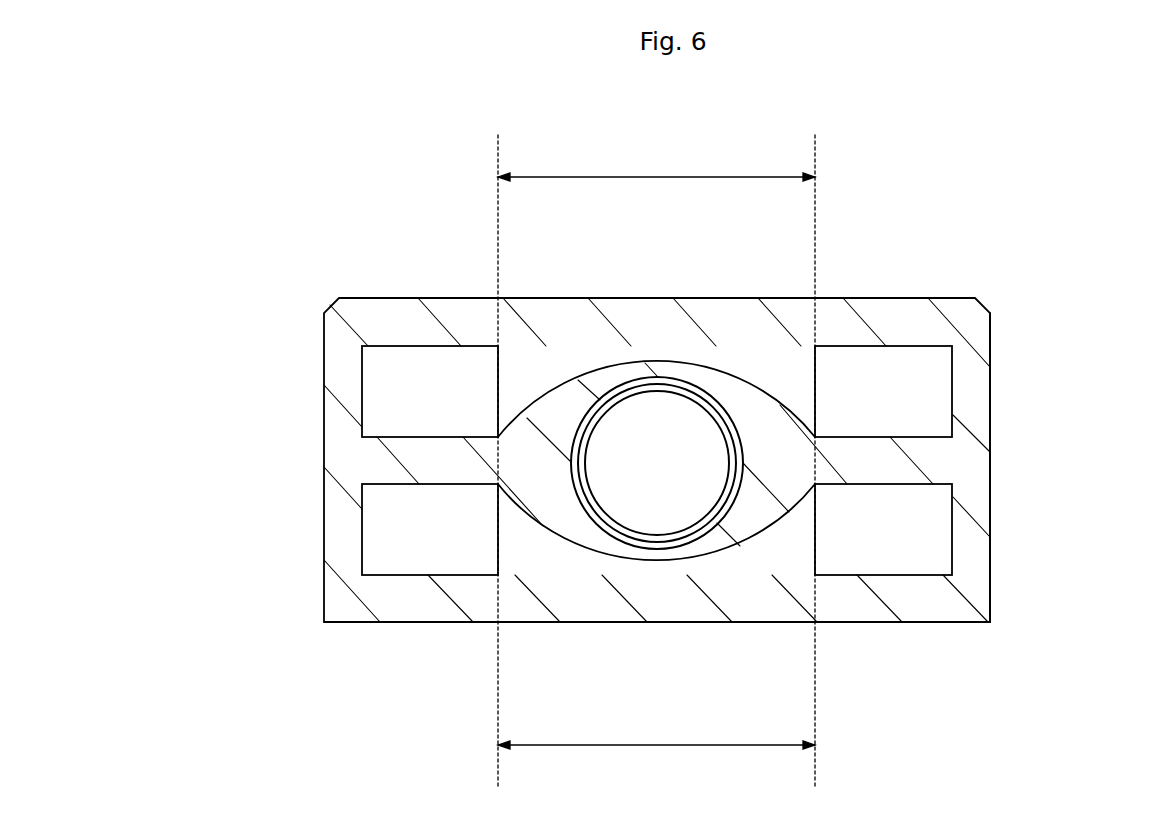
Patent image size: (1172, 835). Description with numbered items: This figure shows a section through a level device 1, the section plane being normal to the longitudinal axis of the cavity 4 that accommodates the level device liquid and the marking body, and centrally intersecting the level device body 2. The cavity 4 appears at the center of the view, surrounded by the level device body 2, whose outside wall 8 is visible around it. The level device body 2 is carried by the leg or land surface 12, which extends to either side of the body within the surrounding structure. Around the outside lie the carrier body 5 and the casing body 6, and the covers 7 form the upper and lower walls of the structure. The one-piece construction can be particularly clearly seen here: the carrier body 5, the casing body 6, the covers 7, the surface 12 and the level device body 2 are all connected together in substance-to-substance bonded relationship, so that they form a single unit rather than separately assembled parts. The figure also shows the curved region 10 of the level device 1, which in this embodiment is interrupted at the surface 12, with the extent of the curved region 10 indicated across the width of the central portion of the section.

The level device 1 is at (848, 254).
The level device body 2 is at (652, 389).
The cavity for accommodating a liquid and the marking body 4 is at (657, 463).
The carrier body 5 is at (1000, 498).
The casing body 6 is at (343, 556).
The cover 7 is at (823, 312).
The outside wall of the level device body 8 is at (575, 378).
The curved regions 10 is at (656, 465).
The leg/land surface 12 is at (443, 462).